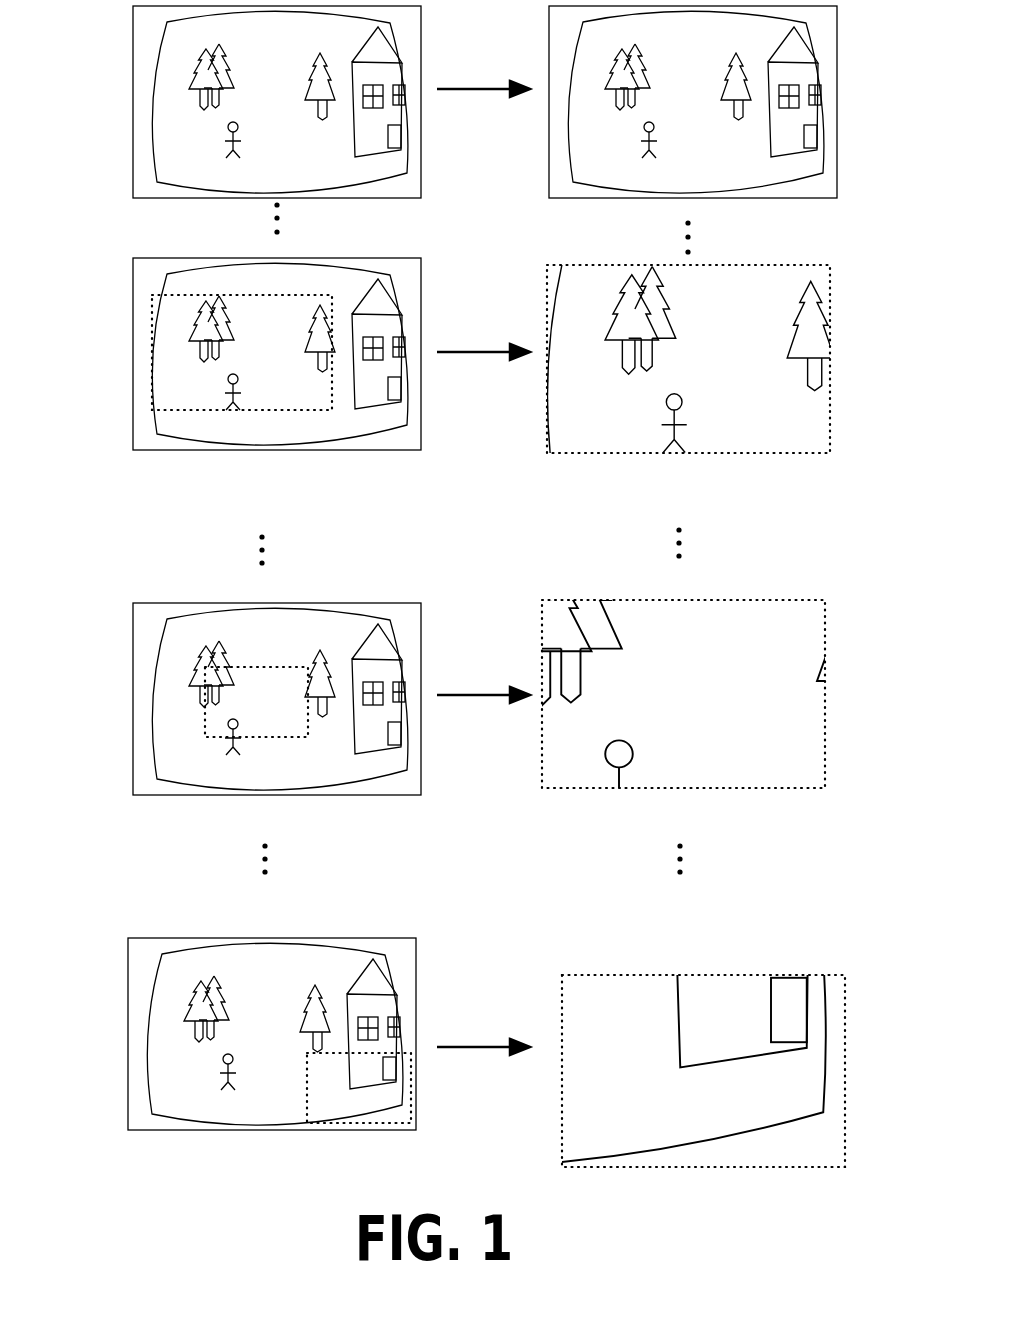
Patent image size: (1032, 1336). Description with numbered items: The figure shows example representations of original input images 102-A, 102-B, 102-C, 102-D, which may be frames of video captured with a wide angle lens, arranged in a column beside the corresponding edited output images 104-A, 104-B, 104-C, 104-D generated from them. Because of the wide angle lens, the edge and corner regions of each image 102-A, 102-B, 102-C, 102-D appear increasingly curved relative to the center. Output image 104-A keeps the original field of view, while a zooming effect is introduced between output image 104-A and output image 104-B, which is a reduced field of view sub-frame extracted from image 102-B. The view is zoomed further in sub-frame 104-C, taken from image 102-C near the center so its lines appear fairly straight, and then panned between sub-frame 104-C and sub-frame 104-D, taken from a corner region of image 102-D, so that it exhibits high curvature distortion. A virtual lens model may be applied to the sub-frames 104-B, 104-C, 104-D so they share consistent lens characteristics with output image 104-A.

The image 102-A is at (87, 91).
The output image 104-A is at (930, 92).
The image 102-B is at (90, 355).
The output image 104-B is at (918, 365).
The image 102-C is at (85, 719).
The sub-frame 104-C is at (930, 694).
The image 102-D is at (85, 1062).
The sub-frame 104-D is at (918, 1058).